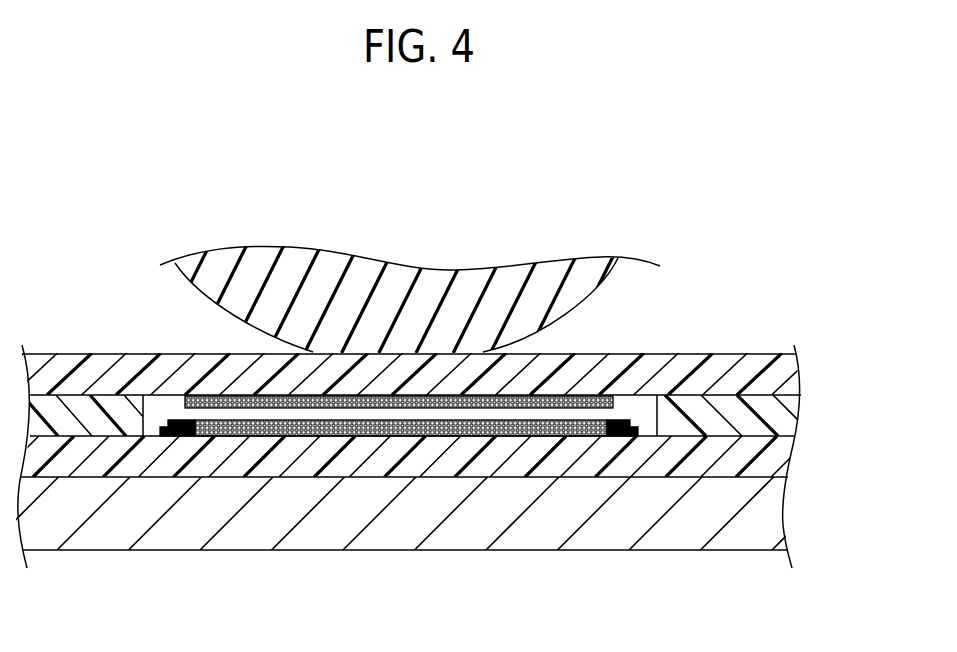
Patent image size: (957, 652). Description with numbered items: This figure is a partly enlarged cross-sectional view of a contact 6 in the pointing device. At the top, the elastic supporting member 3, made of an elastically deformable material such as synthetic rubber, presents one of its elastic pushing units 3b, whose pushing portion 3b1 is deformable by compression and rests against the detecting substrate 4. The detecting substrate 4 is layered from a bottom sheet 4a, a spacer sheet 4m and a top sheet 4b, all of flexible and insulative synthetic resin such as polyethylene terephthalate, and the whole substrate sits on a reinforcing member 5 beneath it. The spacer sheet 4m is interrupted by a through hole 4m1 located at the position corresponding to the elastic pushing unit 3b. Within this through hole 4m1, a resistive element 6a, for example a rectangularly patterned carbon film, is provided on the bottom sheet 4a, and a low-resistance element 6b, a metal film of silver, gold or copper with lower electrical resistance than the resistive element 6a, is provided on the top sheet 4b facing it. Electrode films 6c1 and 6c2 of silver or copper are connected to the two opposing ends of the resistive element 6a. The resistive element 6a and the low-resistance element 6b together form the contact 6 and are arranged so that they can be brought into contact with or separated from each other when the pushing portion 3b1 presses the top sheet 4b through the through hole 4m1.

The elastic supporting member 3 is at (406, 257).
The elastic pushing unit 3b is at (604, 283).
The pushing portion 3b1 is at (252, 320).
The detecting substrate 4 is at (458, 426).
The bottom sheet 4a is at (440, 456).
The top sheet 4b is at (773, 375).
The spacer sheet 4m is at (441, 360).
The through hole 4m1 is at (145, 417).
The reinforcing member 5 is at (775, 510).
The contact 6 is at (416, 458).
The resistive element 6a is at (407, 428).
The low-resistance element 6b is at (590, 396).
The electrode film 6c1 is at (622, 437).
The electrode film 6c2 is at (172, 437).